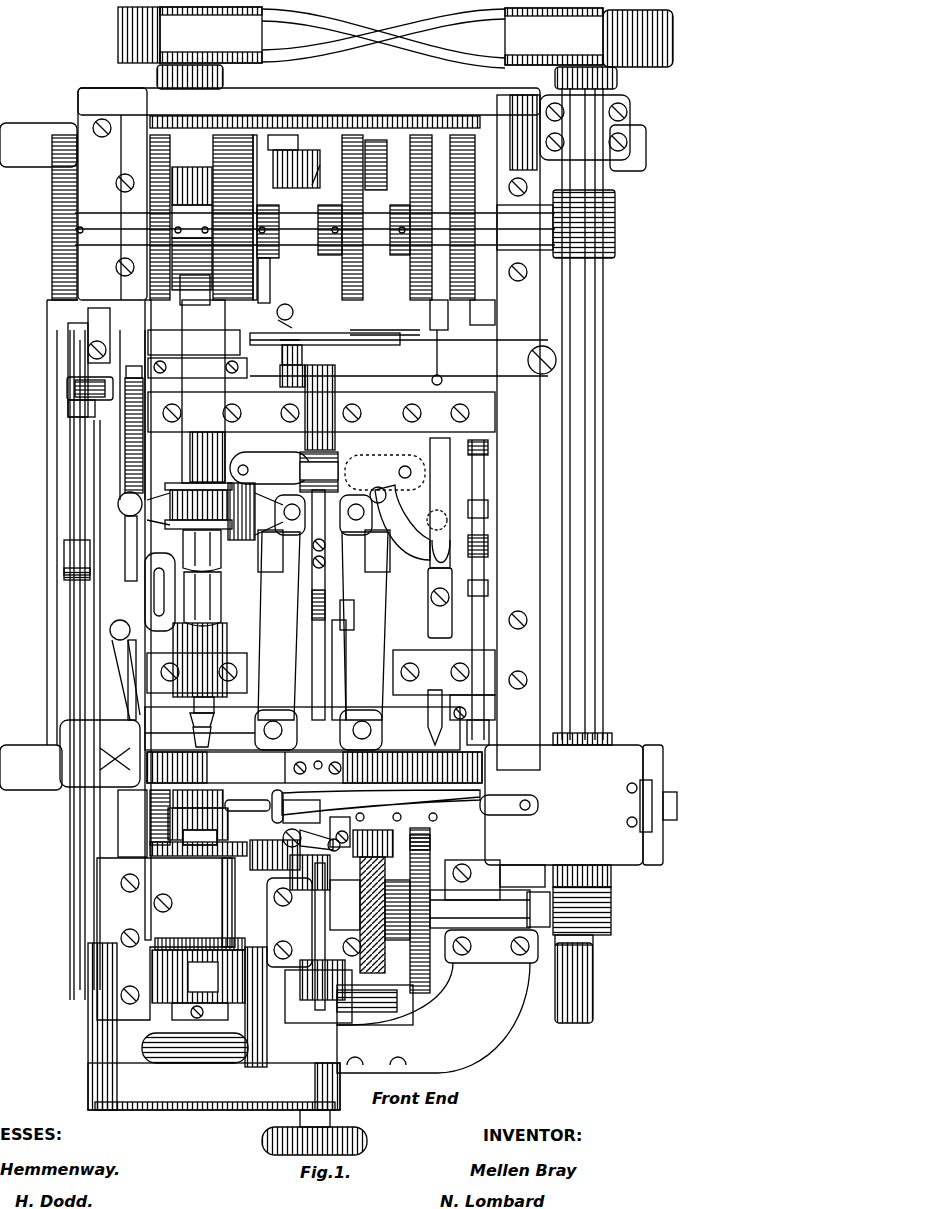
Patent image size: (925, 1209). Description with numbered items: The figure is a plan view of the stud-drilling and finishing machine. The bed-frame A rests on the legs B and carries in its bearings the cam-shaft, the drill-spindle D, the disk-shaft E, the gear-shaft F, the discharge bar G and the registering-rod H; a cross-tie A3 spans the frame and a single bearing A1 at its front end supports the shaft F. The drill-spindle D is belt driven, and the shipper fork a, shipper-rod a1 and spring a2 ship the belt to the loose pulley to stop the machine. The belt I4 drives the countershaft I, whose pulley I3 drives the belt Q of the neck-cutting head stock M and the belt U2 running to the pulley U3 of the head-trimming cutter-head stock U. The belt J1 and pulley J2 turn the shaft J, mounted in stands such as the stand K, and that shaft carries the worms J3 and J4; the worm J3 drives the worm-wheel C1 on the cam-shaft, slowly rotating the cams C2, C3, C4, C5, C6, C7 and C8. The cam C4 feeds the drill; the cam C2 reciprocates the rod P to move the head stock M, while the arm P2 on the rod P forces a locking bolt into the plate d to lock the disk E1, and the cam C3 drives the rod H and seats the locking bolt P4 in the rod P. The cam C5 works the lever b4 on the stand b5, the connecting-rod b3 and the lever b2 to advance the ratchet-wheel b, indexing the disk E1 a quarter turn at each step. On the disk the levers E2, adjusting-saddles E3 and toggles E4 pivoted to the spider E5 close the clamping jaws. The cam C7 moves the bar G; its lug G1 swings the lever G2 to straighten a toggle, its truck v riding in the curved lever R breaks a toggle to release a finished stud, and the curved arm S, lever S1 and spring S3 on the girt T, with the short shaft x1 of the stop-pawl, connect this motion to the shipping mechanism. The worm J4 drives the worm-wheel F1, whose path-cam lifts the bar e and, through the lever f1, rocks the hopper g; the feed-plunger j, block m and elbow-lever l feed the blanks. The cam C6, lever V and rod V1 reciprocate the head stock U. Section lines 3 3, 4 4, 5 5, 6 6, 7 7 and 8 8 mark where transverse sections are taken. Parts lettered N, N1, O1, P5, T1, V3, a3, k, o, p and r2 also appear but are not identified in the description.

The bed-frame A is at (293, 557).
The bearing A1 is at (491, 946).
The cross-tie A3 is at (321, 412).
The legs B is at (323, 456).
The worm-wheel C1 is at (315, 228).
The cam C2 is at (64, 217).
The cam C3 is at (160, 217).
The cam C4 is at (233, 217).
The cam C5 is at (247, 217).
The cam C6 is at (353, 217).
The cam C7 is at (421, 217).
The cam C8 is at (462, 217).
The drill-spindle D is at (197, 506).
The disk-shaft E is at (324, 607).
The disk E1 is at (314, 767).
The levers E2 is at (321, 654).
The adjusting-saddles E3 is at (312, 602).
The toggle E4 is at (349, 461).
The spider E5 is at (327, 466).
The gear-shaft F is at (380, 914).
The worm-wheel F1 is at (592, 985).
The discharge bar G is at (440, 591).
The lug G1 is at (440, 342).
The lever G2 is at (403, 354).
The registering-rod H is at (472, 522).
The shaft I is at (195, 280).
The pulley I3 is at (111, 1026).
The belt I4 is at (215, 516).
The shaft J is at (582, 416).
The belt J1 is at (395, 37).
The pulley J2 is at (598, 78).
The worm J3 is at (564, 224).
The worm J4 is at (589, 900).
The stand K is at (585, 127).
The cutter-head stock M is at (172, 931).
The bevel gear N is at (346, 898).
The gear N1 is at (275, 869).
The roller O1 is at (195, 1036).
The rod P is at (83, 654).
The arm P2 is at (100, 753).
The registering and locking bolt P4 is at (67, 386).
The nut P5 is at (64, 556).
The belt Q is at (209, 1002).
The curved lever R is at (400, 522).
The curved arm S is at (455, 608).
The lever S1 is at (342, 670).
The spring S3 is at (191, 718).
The girt T is at (302, 728).
The hub T1 is at (173, 821).
The cutter-head stock U is at (289, 922).
The belt U2 is at (214, 1086).
The pulley U3 is at (317, 1132).
The lever V is at (327, 162).
The rod V1 is at (385, 329).
The rod V3 is at (358, 615).
The shipper fork a is at (160, 592).
The shipper-rod a1 is at (121, 606).
The spring a2 is at (125, 445).
The plunger a3 is at (320, 407).
The ratchet-wheel b is at (283, 376).
The lever b2 is at (279, 355).
The connecting-rod b3 is at (296, 318).
The lever b4 is at (267, 280).
The stand b5 is at (322, 182).
The plate d is at (321, 758).
The perpendicular bar e is at (490, 909).
The lever f1 is at (495, 880).
The hopper g is at (581, 805).
The feed-plunger j is at (318, 943).
The lever k is at (381, 805).
The elbow-lever l is at (305, 820).
The block m is at (292, 885).
The lever o is at (509, 805).
The block p is at (340, 822).
The link r2 is at (247, 798).
The truck v is at (435, 506).
The vertical shaft x1 is at (113, 670).
The section line 3 3 is at (165, 471).
The section line 4 4 is at (390, 612).
The section line 5 5 is at (145, 853).
The section line 6 6 is at (140, 307).
The section line 7 7 is at (10, 767).
The section line 8 8 is at (230, 904).